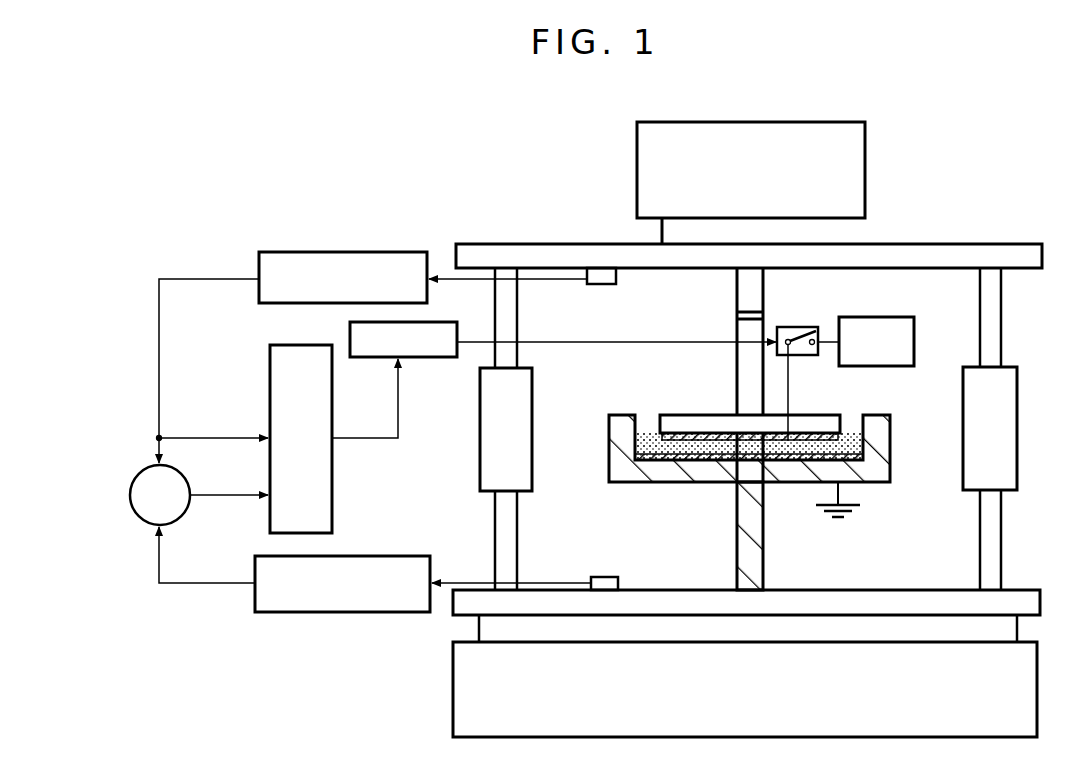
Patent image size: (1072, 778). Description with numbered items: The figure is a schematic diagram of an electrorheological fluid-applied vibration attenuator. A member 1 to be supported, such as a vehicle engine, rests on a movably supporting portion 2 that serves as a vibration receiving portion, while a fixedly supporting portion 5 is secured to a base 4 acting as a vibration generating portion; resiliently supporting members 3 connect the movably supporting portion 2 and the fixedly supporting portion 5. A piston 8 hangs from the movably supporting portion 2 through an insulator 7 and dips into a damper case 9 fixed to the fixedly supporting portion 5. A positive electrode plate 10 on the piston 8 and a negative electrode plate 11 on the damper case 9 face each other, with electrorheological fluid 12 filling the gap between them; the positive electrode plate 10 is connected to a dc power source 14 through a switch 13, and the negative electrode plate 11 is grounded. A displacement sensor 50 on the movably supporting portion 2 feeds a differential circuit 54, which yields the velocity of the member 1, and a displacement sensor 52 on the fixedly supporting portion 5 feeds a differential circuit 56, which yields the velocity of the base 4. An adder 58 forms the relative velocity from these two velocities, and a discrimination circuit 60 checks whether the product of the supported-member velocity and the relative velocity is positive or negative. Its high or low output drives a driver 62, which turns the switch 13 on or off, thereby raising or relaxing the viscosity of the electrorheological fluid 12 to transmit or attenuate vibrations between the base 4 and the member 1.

The member to be supported 1 is at (866, 172).
The movably supporting portion 2 is at (958, 250).
The resiliently supporting members 3 is at (1018, 406).
The base 4 is at (1038, 677).
The fixedly supporting portion 5 is at (1040, 603).
The insulator 7 is at (737, 319).
The piston 8 is at (682, 415).
The damper case 9 is at (616, 415).
The positive electrode plate 10 is at (716, 435).
The negative electrode plate 11 is at (637, 433).
The electrorheological fluid 12 is at (704, 483).
The switch 13 is at (810, 356).
The dc power source 14 is at (866, 341).
The displacement sensor 50 is at (602, 284).
The displacement sensor 52 is at (611, 577).
The differential circuit 54 is at (341, 250).
The differential circuit 56 is at (350, 612).
The adder 58 is at (135, 516).
The discrimination circuit 60 is at (333, 500).
The driver 62 is at (432, 357).